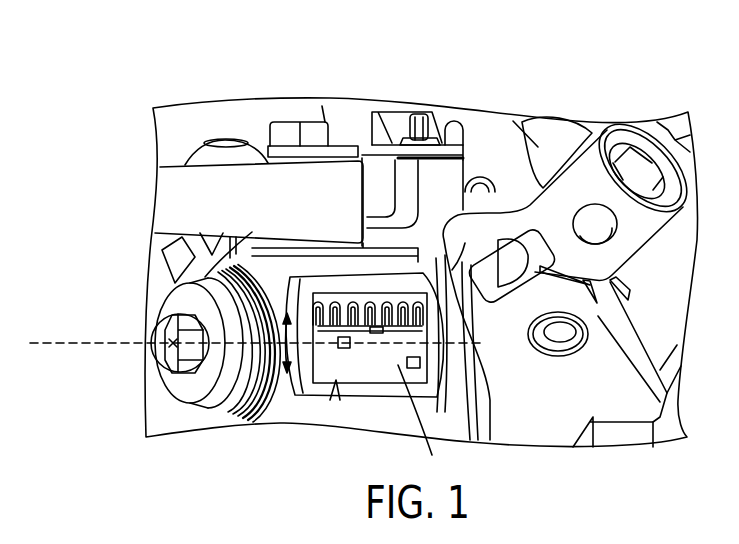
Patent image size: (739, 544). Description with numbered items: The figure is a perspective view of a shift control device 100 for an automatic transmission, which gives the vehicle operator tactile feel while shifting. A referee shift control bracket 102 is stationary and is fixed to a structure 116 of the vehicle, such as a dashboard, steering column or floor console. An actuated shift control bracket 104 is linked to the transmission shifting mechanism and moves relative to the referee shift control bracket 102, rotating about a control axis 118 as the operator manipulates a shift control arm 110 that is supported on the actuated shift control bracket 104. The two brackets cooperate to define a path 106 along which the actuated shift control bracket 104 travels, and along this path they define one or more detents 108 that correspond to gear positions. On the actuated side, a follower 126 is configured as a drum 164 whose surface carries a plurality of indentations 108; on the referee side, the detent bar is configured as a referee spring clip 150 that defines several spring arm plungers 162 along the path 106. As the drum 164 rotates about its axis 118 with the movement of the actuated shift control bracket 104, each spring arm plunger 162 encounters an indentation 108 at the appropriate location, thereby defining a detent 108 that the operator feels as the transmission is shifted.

The shift control device 100 is at (208, 98).
The referee shift control bracket 102 is at (320, 292).
The actuated shift control bracket 104 is at (512, 428).
The path 106 is at (296, 382).
The detents 108 is at (346, 349).
The shift control arm 110 is at (643, 174).
The structure 116 is at (402, 124).
The control axis 118 is at (168, 346).
The follower 126 is at (422, 423).
The referee spring clip 150 is at (373, 291).
The spring arm plungers 162 is at (418, 303).
The drum 164 is at (395, 376).